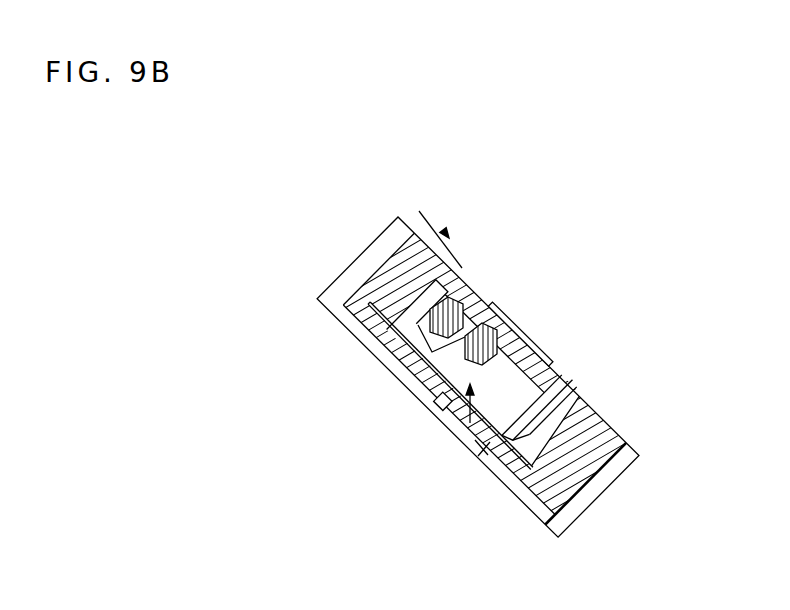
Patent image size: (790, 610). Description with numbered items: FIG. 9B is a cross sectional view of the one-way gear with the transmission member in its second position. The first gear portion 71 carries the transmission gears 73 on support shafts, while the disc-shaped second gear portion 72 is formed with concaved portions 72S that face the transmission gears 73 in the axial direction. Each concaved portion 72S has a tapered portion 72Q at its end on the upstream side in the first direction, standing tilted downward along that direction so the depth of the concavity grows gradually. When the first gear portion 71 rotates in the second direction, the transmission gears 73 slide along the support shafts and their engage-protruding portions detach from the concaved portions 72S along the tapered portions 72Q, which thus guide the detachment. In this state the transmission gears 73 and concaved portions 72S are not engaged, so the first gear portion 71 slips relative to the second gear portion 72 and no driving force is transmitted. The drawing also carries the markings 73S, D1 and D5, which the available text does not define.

The first gear portion 71 is at (604, 494).
The second gear portion 72 is at (499, 467).
The tapered portion 72Q is at (455, 418).
The concaved portion 72S is at (483, 433).
The transmission gear 73 is at (550, 358).
The side portion of element 73 73S is at (400, 345).
The first direction D1 is at (419, 210).
The fifth direction D5 is at (475, 399).